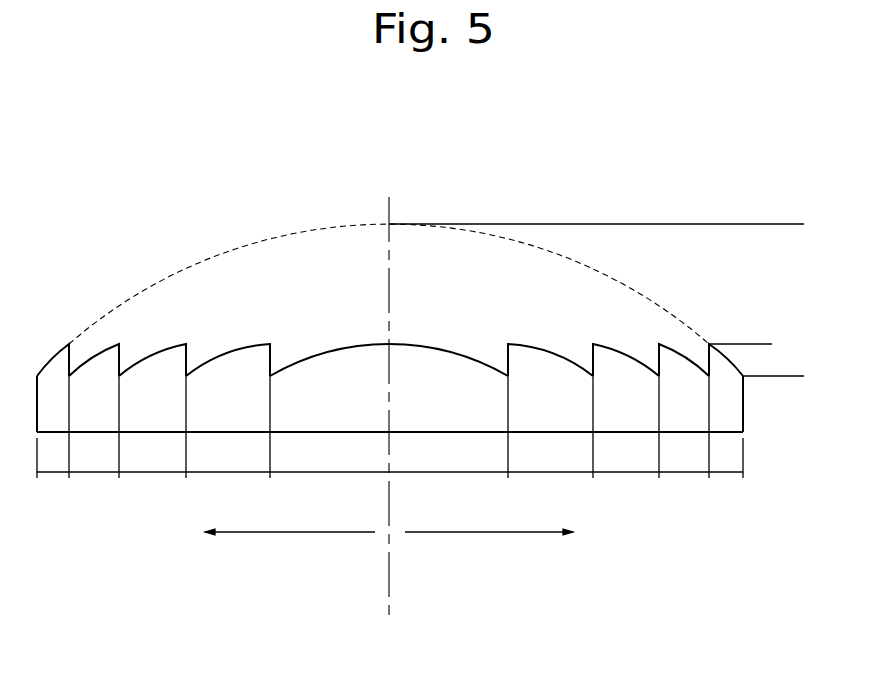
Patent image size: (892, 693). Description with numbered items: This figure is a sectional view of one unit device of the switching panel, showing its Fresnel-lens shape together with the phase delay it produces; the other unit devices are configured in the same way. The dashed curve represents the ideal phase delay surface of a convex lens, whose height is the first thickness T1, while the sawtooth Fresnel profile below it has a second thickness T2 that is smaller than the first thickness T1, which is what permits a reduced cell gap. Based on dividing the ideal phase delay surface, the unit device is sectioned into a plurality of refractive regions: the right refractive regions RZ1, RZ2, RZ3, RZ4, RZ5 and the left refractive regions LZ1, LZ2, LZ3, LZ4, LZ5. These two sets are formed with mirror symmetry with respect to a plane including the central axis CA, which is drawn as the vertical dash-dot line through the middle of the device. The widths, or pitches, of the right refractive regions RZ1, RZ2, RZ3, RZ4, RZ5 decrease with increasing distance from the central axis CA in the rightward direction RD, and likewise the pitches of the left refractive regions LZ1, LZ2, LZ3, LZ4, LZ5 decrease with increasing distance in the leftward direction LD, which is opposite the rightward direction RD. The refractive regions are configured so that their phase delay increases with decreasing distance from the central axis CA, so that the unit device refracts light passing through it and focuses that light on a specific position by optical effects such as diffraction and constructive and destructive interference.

The left refractive region LZ1 is at (329, 423).
The left refractive region LZ2 is at (228, 423).
The left refractive region LZ3 is at (152, 423).
The left refractive region LZ4 is at (94, 423).
The left refractive region LZ5 is at (53, 423).
The right refractive region RZ1 is at (448, 423).
The right refractive region RZ2 is at (550, 423).
The right refractive region RZ3 is at (626, 423).
The right refractive region RZ4 is at (684, 423).
The right refractive region RZ5 is at (726, 423).
The first thickness T1 is at (798, 224).
The second thickness T2 is at (768, 344).
The leftward direction LD is at (276, 532).
The rightward direction RD is at (509, 532).
The central axis CA is at (389, 593).